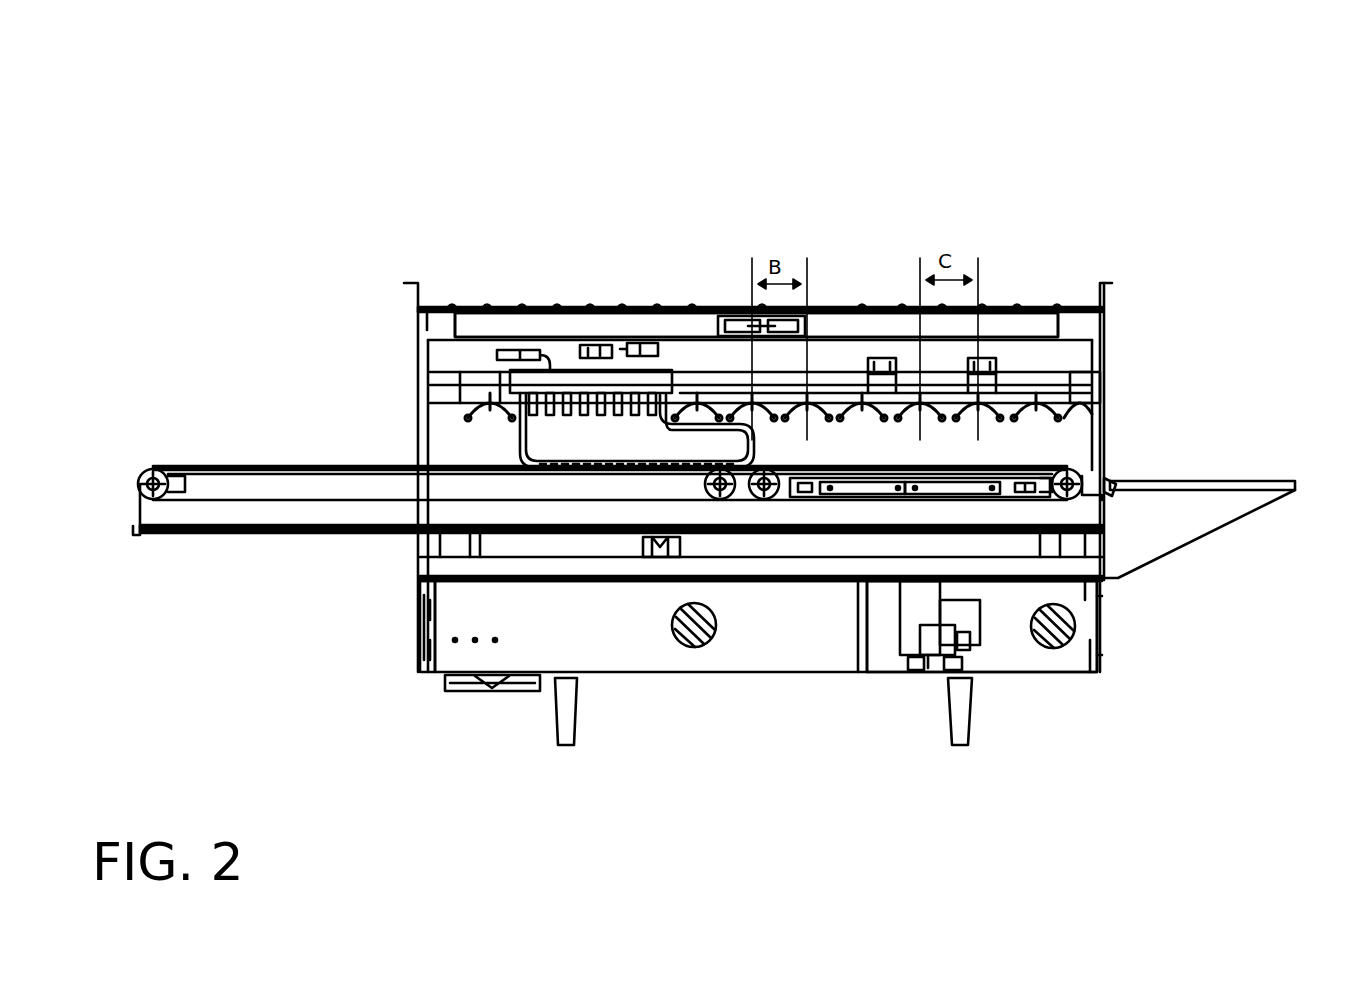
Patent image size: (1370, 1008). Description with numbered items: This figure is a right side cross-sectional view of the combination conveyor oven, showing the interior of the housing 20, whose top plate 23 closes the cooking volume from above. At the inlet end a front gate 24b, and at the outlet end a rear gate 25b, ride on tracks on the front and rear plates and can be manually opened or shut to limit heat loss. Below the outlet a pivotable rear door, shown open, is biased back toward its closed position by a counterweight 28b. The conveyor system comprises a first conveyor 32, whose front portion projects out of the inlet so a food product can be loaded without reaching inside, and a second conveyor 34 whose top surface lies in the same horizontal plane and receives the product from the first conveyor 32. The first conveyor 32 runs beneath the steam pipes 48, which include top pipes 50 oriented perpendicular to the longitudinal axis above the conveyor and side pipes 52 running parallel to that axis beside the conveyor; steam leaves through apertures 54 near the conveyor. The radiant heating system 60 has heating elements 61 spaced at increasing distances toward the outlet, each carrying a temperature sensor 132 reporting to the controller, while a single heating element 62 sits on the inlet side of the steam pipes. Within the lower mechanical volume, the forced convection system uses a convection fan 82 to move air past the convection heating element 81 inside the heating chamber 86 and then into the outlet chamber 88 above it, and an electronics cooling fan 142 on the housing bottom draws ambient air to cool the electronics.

The housing 20 is at (1068, 307).
The top plate 23 is at (697, 307).
The front gate 24b is at (405, 283).
The rear gate 25b is at (1108, 285).
The counterweight 28b is at (1107, 500).
The first conveyor 32 is at (285, 503).
The second conveyor 34 is at (1068, 467).
The steam pipes 48 is at (650, 345).
The top pipes 50 is at (608, 392).
The side pipes 52 is at (470, 455).
The apertures 54 is at (577, 455).
The radiant heating system 60 is at (875, 366).
The heating elements 61 is at (720, 395).
The single heating element 62 is at (500, 355).
The convection heating element 81 is at (826, 497).
The convection fan 82 is at (963, 622).
The heating chamber 86 is at (1097, 600).
The outlet chamber 88 is at (895, 497).
The temperature sensors 132 is at (1073, 410).
The electronics cooling fan 142 is at (448, 692).